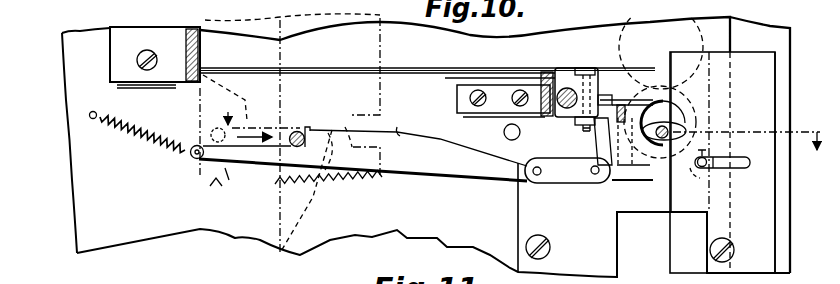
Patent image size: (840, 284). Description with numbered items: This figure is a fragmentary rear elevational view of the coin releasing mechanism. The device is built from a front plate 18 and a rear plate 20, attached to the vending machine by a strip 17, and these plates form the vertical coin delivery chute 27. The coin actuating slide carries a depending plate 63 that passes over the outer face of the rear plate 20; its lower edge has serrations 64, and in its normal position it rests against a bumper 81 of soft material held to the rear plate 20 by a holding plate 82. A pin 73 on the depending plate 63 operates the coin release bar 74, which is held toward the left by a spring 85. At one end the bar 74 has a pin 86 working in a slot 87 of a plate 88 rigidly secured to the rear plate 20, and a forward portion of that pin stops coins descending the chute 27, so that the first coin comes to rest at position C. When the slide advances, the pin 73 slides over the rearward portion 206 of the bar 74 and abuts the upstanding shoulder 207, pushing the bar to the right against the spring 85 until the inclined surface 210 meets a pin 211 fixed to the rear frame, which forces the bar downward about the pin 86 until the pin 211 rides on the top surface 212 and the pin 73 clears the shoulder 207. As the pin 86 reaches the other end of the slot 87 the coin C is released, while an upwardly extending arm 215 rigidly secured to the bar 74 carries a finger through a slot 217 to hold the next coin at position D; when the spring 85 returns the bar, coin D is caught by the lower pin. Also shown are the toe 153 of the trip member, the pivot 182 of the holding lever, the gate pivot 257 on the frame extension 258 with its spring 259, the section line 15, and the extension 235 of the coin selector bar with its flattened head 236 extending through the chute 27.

The holding plate 82 is at (110, 46).
The bumper 81 is at (185, 43).
The depending plate 63 is at (200, 99).
The section line 15 is at (510, 131).
The pin 73 is at (210, 133).
The spring 85 is at (124, 131).
The rearward portion 206 is at (226, 172).
The toe 153 is at (280, 240).
The upstanding shoulder 207 is at (320, 129).
The top surface 212 is at (418, 146).
The serrations 64 is at (348, 183).
The front plate 18 is at (396, 232).
The coin release bar 74 is at (440, 175).
The pin 211 is at (504, 130).
The inclined surface 210 is at (488, 142).
The spring 259 is at (568, 131).
The pivot 182 is at (565, 86).
The extension 258 is at (575, 66).
The pivot 257 is at (583, 64).
The slot 217 is at (641, 106).
The upwardly extending arm 215 is at (596, 155).
The coin delivery chute 27 is at (618, 201).
The coin C is at (681, 115).
The extension 235 is at (668, 127).
The head 236 is at (672, 131).
The slot 87 is at (742, 157).
The pin 86 is at (706, 175).
The strip 17 is at (786, 184).
The plate 88 is at (767, 215).
The rear plate 20 is at (731, 43).
The coin D is at (670, 53).